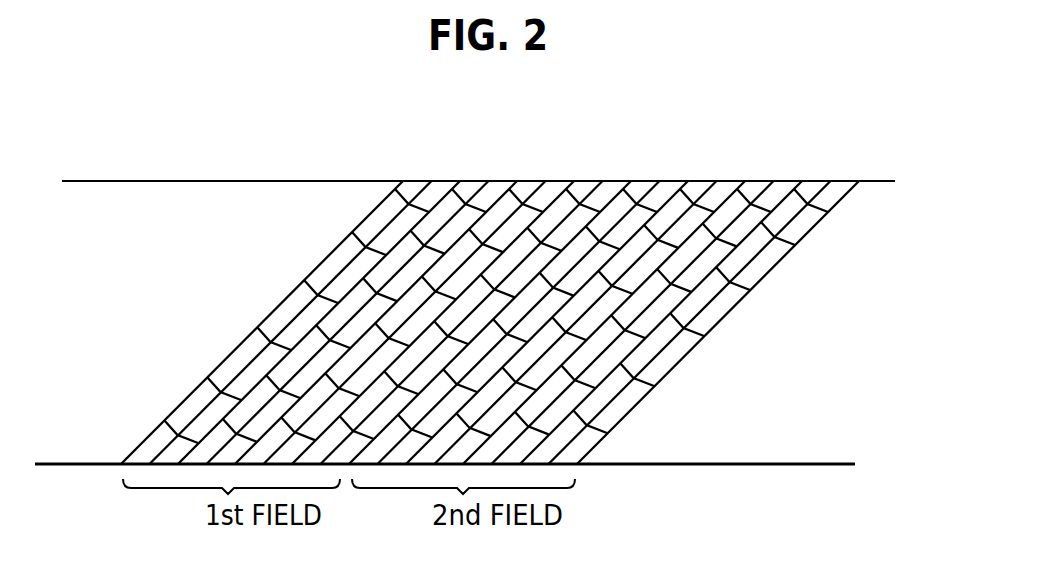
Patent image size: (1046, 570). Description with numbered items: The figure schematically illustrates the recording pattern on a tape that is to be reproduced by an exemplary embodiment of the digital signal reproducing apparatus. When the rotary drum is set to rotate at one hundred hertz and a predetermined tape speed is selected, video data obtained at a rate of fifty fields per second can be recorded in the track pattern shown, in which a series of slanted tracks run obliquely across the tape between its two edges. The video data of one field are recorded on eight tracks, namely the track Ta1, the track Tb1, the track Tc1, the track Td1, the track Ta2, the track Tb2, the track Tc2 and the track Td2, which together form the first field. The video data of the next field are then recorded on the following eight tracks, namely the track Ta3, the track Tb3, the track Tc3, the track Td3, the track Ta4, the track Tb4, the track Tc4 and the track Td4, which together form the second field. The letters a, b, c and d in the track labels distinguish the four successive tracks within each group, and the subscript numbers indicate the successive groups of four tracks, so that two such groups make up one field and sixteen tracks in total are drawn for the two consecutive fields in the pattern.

The track Ta1 is at (412, 190).
The track Tb1 is at (441, 190).
The track Tc1 is at (470, 190).
The track Td1 is at (499, 190).
The track Ta2 is at (528, 190).
The track Tb2 is at (557, 190).
The track Tc2 is at (586, 190).
The track Td2 is at (615, 190).
The track Ta3 is at (644, 190).
The track Tb3 is at (673, 190).
The track Tc3 is at (702, 190).
The track Td3 is at (731, 190).
The track Ta4 is at (760, 190).
The track Tb4 is at (789, 190).
The track Tc4 is at (818, 190).
The track Td4 is at (847, 190).